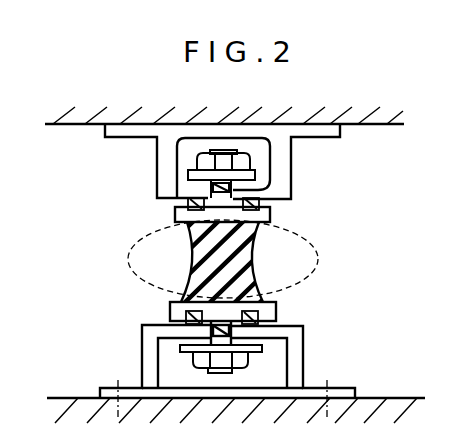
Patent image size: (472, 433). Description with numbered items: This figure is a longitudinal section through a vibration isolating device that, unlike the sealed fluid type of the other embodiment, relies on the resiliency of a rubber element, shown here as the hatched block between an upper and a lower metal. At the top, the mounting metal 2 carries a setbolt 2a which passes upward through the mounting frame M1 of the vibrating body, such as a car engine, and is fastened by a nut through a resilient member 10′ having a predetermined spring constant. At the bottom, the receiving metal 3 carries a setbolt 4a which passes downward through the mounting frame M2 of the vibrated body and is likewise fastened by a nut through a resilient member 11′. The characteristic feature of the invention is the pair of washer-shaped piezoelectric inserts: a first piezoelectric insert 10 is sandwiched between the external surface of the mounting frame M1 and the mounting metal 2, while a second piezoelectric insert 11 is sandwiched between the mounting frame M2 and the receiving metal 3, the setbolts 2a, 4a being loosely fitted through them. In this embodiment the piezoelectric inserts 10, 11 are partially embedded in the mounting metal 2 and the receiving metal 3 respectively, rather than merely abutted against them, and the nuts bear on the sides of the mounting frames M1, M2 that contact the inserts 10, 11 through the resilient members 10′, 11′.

The mounting metal 2 is at (176, 218).
The setbolt 2a is at (208, 187).
The receiving metal 3 is at (168, 302).
The setbolt 4a is at (270, 325).
The first piezoelectric insert 10 is at (188, 204).
The resilient member 10′ is at (262, 193).
The second piezoelectric insert 11 is at (186, 330).
The resilient member 11′ is at (262, 337).
The mounting frame M1 is at (283, 162).
The mounting frame M2 is at (143, 357).